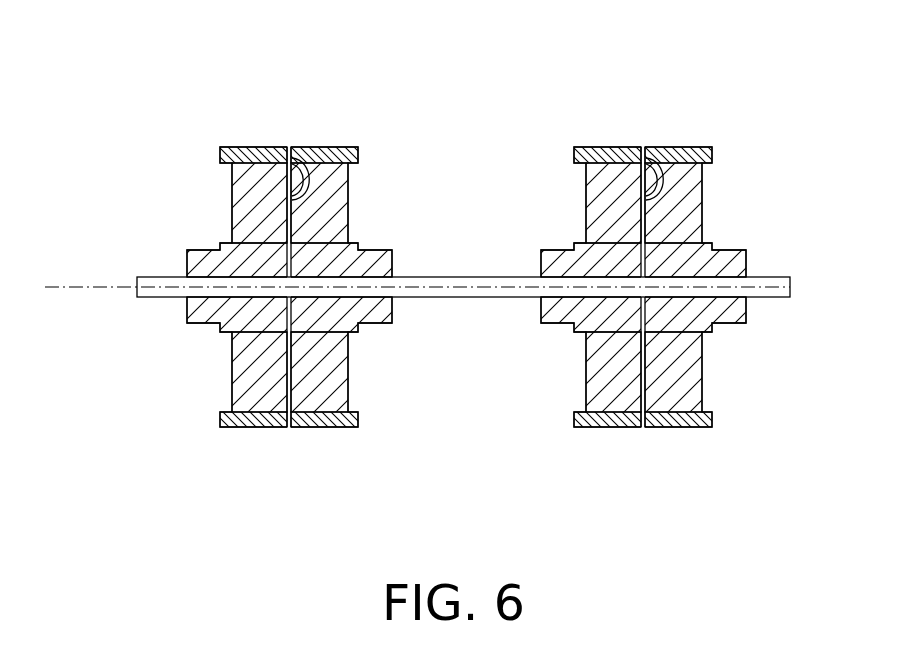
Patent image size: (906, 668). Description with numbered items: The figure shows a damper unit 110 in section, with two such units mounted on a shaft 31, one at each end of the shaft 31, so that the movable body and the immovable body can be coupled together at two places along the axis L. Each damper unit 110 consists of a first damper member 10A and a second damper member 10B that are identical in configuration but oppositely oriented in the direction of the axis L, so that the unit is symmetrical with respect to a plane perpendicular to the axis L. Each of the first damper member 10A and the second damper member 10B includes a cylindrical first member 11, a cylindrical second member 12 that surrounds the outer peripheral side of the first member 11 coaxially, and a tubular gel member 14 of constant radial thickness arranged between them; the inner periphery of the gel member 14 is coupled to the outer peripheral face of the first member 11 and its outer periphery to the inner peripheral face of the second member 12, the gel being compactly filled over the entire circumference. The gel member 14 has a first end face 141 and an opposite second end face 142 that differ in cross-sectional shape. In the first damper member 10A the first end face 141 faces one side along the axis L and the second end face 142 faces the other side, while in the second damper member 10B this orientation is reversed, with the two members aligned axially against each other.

The damper unit 110 is at (360, 60).
The first damper member 10A is at (244, 138).
The second damper member 10B is at (329, 138).
The first end face 141 is at (299, 150).
The second end face 142 is at (232, 198).
The first member 11 is at (187, 318).
The gel member 14 is at (243, 362).
The second member 12 is at (222, 418).
The shaft 31 is at (790, 290).
The axis L is at (406, 290).